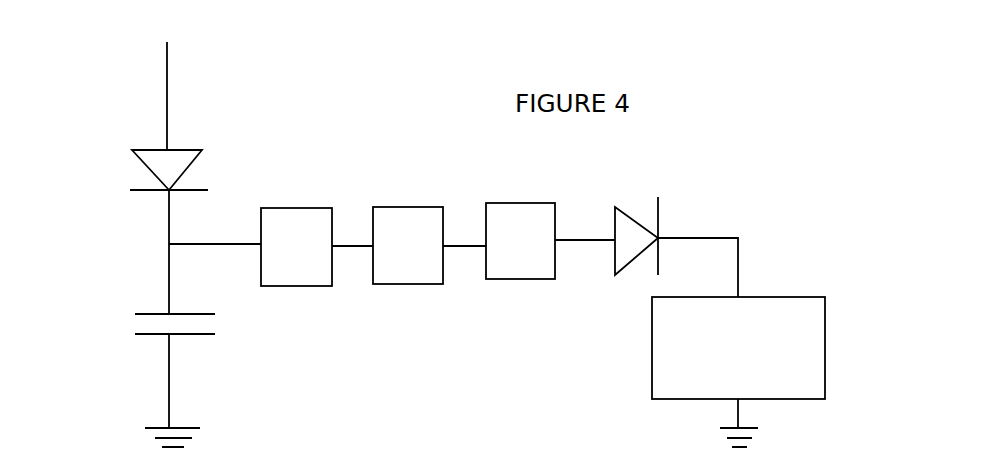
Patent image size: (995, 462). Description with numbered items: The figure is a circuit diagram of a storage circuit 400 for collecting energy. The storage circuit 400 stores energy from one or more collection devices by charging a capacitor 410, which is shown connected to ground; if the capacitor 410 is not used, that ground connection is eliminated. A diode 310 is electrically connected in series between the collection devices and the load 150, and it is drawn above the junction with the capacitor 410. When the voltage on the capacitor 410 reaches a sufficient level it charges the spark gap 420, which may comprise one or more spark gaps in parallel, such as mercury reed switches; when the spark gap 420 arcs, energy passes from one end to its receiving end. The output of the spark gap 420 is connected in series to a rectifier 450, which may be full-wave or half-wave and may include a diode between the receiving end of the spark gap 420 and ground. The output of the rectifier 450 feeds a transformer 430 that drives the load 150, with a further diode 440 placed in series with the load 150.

The storage circuit 400 is at (325, 106).
The diode 310 is at (162, 170).
The capacitor 410 is at (160, 320).
The spark gap 420 is at (278, 256).
The rectifier 450 is at (403, 265).
The transformer 430 is at (517, 250).
The diode 440 is at (630, 230).
The load 150 is at (795, 377).